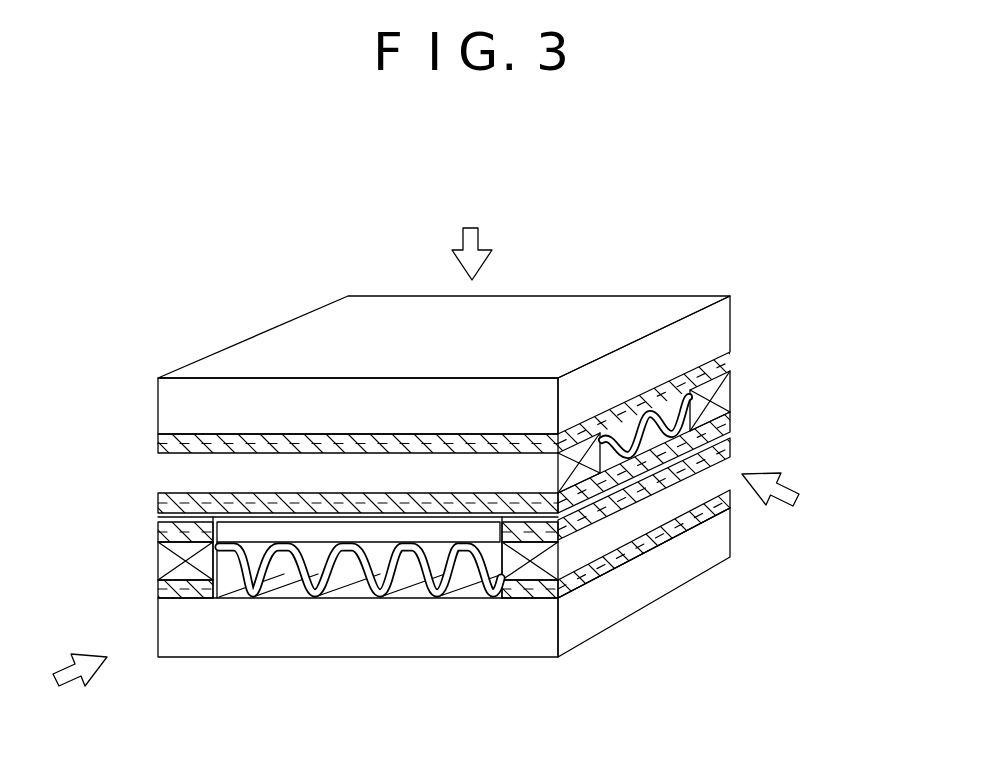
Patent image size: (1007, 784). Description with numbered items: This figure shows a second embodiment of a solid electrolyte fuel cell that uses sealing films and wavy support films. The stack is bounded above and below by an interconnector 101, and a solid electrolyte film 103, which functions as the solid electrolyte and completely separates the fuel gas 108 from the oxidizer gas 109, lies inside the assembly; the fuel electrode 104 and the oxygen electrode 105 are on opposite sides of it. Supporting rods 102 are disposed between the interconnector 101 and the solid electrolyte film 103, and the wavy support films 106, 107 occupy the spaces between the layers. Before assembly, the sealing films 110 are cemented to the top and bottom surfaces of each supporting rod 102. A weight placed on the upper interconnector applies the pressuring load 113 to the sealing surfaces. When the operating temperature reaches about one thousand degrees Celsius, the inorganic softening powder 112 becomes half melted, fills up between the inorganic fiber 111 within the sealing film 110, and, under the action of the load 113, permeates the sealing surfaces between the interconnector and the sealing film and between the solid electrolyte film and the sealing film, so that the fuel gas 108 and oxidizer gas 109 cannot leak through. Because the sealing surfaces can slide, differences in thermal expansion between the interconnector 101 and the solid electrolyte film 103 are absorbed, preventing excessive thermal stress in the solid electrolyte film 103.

The interconnector 101 is at (572, 316).
The supporting rod 102 is at (165, 480).
The solid electrolyte film 103 is at (725, 428).
The fuel electrode 104 is at (633, 470).
The oxygen electrode 105 is at (310, 532).
The wavy support film 106 is at (650, 390).
The wavy support film 107 is at (385, 600).
The fuel gas 108 is at (798, 503).
The oxidizer gas 109 is at (72, 688).
The sealing film 110 is at (268, 493).
The inorganic fiber 111 is at (672, 522).
The inorganic softening powder 112 is at (703, 523).
The pressuring load 113 is at (470, 228).